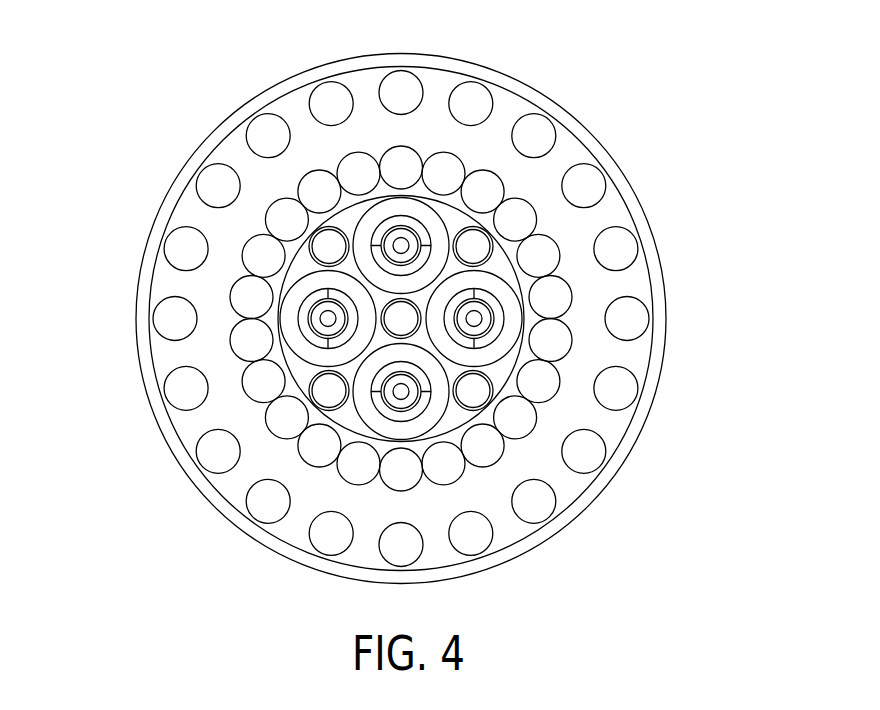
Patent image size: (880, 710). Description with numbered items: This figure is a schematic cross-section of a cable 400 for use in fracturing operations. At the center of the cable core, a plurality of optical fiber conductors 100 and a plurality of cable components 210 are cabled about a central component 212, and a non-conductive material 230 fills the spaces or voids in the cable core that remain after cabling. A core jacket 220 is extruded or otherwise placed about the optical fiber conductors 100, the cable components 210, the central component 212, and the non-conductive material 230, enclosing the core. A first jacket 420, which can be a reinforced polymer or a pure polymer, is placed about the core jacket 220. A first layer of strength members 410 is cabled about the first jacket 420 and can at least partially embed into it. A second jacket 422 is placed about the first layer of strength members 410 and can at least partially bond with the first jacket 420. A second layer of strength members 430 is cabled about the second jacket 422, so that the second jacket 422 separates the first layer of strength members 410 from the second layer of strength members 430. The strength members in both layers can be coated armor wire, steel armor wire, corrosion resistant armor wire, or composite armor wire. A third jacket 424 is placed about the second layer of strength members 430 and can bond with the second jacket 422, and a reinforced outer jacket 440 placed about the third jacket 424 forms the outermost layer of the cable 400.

The cable 400 is at (146, 52).
The reinforced outer jacket 440 is at (413, 53).
The second layer of strength members 430 is at (551, 137).
The third jacket 424 is at (613, 210).
The second jacket 422 is at (618, 432).
The first layer of strength members 410 is at (493, 453).
The first jacket 420 is at (372, 443).
The non-conductive material 230 is at (300, 267).
The optical fiber conductor 100 is at (500, 318).
The cable component 210 is at (327, 240).
The core jacket 220 is at (395, 330).
The central component 212 is at (303, 373).